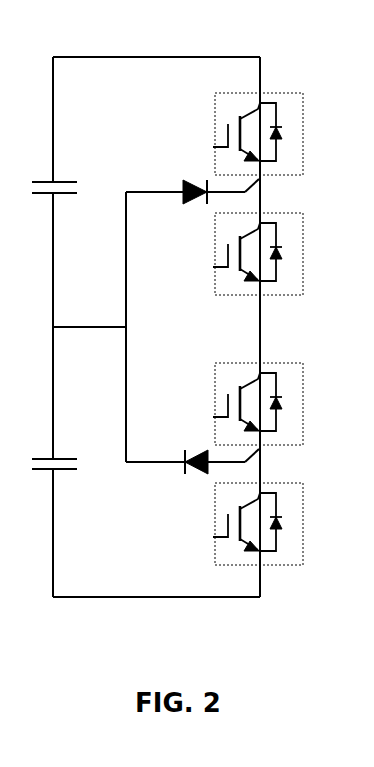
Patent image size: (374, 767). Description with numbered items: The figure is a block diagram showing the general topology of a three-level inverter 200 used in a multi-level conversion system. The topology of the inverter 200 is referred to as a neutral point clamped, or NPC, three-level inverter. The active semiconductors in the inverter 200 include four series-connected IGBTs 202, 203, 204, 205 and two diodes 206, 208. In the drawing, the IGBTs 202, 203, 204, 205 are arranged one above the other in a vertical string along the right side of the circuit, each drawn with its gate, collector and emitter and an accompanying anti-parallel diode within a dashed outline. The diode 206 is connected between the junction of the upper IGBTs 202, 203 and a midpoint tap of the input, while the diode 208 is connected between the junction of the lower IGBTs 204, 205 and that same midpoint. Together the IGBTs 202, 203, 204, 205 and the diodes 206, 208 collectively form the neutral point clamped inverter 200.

The 3-level inverter 200 is at (187, 305).
The IGBT 202 is at (277, 134).
The IGBT 203 is at (277, 254).
The IGBT 204 is at (277, 404).
The IGBT 205 is at (277, 524).
The diode 206 is at (178, 172).
The diode 208 is at (180, 446).